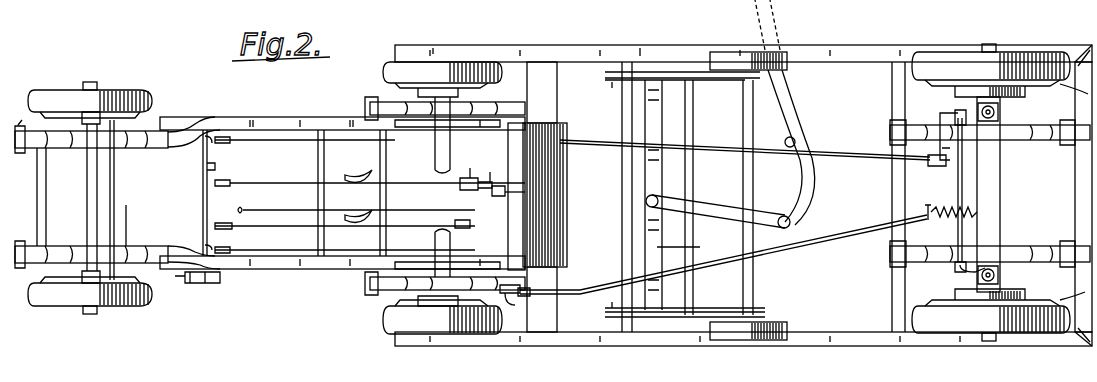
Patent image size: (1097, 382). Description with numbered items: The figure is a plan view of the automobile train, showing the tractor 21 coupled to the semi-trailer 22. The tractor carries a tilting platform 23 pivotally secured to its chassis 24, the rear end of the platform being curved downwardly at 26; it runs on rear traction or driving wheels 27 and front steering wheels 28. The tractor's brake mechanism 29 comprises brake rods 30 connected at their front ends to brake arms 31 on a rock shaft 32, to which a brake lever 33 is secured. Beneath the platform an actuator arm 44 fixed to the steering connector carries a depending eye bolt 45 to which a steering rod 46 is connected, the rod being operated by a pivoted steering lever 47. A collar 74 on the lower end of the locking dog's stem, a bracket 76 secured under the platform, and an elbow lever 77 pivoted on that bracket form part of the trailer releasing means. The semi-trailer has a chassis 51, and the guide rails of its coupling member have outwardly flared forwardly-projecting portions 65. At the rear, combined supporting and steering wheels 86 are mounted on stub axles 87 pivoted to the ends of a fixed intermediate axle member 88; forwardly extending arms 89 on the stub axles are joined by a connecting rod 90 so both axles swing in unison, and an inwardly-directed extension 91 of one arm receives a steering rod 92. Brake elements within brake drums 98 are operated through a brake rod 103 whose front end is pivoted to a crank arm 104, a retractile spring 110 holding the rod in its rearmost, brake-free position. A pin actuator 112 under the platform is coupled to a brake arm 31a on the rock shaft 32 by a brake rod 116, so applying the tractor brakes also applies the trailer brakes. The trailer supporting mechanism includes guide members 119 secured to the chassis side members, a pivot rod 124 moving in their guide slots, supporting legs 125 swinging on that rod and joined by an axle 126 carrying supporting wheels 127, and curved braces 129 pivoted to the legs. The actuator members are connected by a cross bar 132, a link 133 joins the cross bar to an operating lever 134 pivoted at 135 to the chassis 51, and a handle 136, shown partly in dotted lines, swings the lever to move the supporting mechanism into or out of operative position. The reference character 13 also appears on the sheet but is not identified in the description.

The machine frame 13 is at (1005, 33).
The tractor 21 is at (342, 183).
The semi-trailer 22 is at (618, 55).
The tilting platform 23 is at (380, 153).
The chassis 24 is at (333, 117).
The downwardly curved rear end 26 is at (567, 200).
The rear traction or driving wheels 27 is at (383, 72).
The front traction or steering wheels 28 is at (90, 198).
The brake mechanism 29 is at (210, 223).
The brake rods 30 is at (278, 140).
The brake arms 31 is at (200, 150).
The brake arm 31a is at (227, 160).
The rock shaft 32 is at (203, 178).
The brake lever 33 is at (190, 284).
The actuator arm 44 is at (462, 192).
The eye bolt 45 is at (470, 224).
The steering rod 46 is at (372, 222).
The steering lever 47 is at (345, 208).
The chassis 51 is at (503, 56).
The forwardly-projecting portions 65 is at (365, 180).
The collar 74 is at (498, 173).
The bracket 76 is at (507, 192).
The elbow lever 77 is at (524, 200).
The combined supporting and steering wheels 86 is at (1068, 298).
The stub axles 87 is at (1000, 112).
The fixed intermediate axle member 88 is at (1000, 203).
The forwardly extending arms 89 is at (958, 113).
The connecting rod 90 is at (958, 184).
The inwardly-directed extension 91 is at (928, 163).
The steering rod 92 is at (830, 157).
The brake drums 98 is at (1030, 90).
The brake rod 103 is at (822, 244).
The crank arm 104 is at (534, 308).
The retractile spring 110 is at (941, 204).
The pin actuator 112 is at (474, 165).
The brake rod 116 is at (300, 183).
The guide members 119 is at (660, 75).
The pivot rod 124 is at (625, 250).
The supporting legs 125 is at (695, 78).
The axle 126 is at (735, 172).
The supporting wheels 127 is at (780, 57).
The curved braces 129 is at (723, 82).
The cross bar 132 is at (700, 248).
The link 133 is at (730, 208).
The operating lever 134 is at (800, 187).
The pivot 135 is at (796, 138).
The handle 136 is at (755, 13).